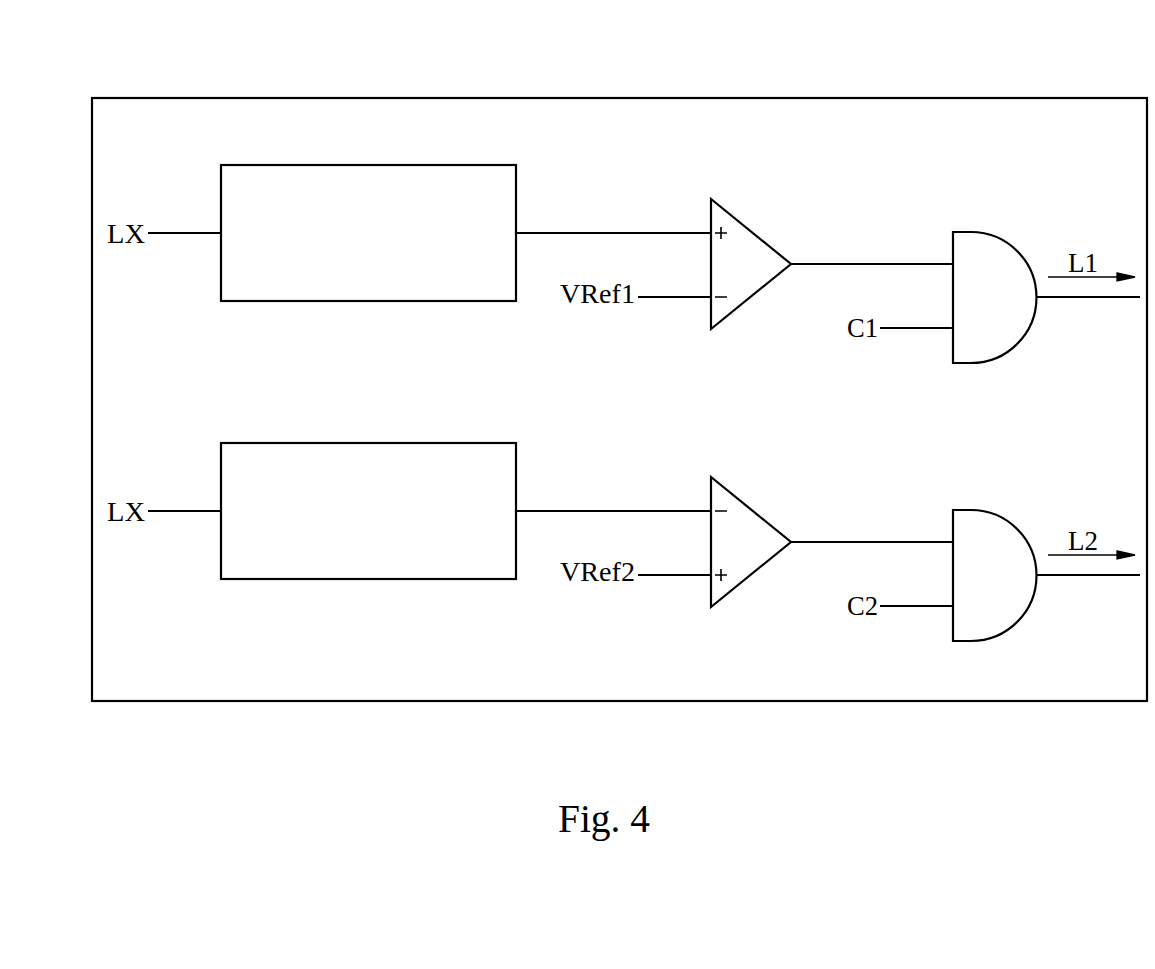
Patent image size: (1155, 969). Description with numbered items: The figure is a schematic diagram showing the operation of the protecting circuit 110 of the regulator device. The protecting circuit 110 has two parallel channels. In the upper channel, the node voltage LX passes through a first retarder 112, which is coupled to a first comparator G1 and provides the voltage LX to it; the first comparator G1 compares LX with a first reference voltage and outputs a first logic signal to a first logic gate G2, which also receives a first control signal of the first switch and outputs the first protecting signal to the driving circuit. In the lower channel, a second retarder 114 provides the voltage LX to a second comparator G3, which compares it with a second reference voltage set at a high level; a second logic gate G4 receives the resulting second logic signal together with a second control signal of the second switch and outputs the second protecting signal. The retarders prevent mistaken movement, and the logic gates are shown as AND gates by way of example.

The protecting circuit 110 is at (617, 98).
The first retarder 112 is at (368, 165).
The second retarder 114 is at (368, 443).
The first comparator G1 is at (755, 230).
The first logic gate G2 is at (1002, 243).
The second comparator G3 is at (755, 508).
The second logic gate G4 is at (1002, 521).